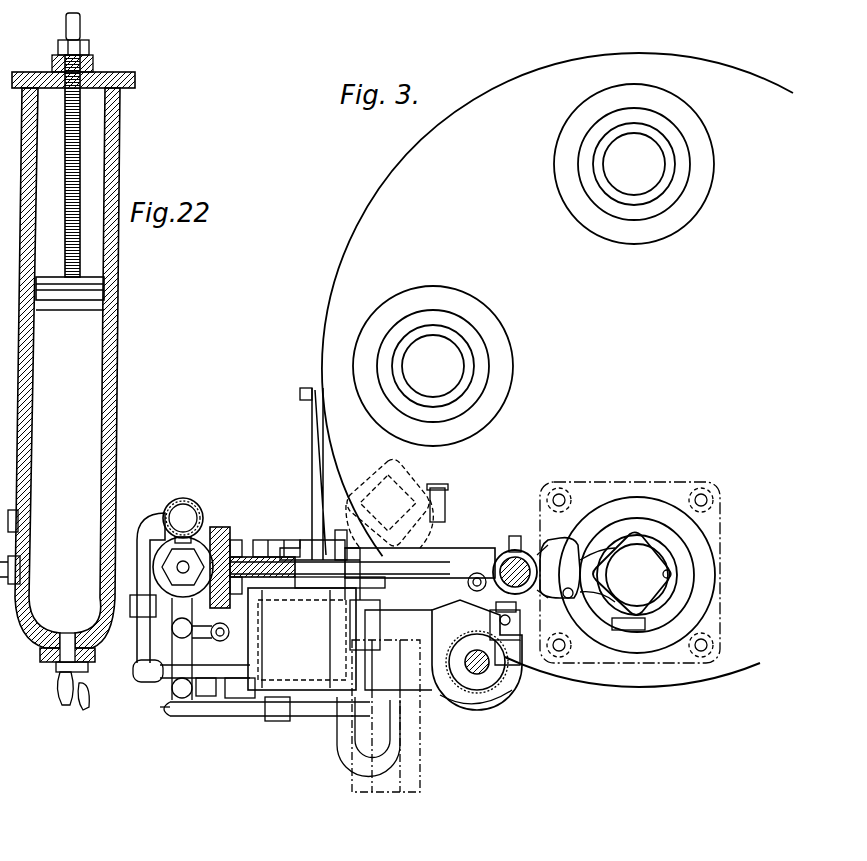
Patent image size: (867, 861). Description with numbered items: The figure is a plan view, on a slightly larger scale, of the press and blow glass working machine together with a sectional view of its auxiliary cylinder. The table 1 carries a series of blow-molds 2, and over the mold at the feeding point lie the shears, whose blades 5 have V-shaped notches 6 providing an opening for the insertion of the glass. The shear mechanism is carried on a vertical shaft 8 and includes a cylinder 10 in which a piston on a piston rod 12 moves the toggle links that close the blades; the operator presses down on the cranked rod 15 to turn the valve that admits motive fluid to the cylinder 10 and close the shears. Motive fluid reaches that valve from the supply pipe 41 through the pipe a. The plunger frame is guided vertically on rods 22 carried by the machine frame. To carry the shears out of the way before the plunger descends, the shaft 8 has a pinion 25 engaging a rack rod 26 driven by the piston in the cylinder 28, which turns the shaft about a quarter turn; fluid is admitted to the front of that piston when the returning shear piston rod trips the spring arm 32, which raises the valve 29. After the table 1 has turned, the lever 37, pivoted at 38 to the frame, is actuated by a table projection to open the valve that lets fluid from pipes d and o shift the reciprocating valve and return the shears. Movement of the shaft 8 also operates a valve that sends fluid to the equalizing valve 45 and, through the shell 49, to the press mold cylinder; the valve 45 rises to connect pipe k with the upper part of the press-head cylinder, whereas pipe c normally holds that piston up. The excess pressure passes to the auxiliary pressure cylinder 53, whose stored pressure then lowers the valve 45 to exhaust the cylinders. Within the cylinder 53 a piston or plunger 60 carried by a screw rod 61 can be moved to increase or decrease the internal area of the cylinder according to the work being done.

In FIG. 3, the table 1 is at (557, 370).
In FIG. 3, the blow-molds 2 is at (680, 188).
In FIG. 3, the shear blades 5 is at (672, 576).
In FIG. 3, the V-shaped notches 6 is at (632, 600).
In FIG. 3, the vertical shaft 8 is at (483, 672).
In FIG. 3, the cylinder 10 is at (455, 538).
In FIG. 3, the piston rod 12 is at (577, 555).
In FIG. 3, the cranked rod 15 is at (612, 622).
In FIG. 3, the rods 22 is at (512, 545).
In FIG. 3, the pinion 25 is at (463, 700).
In FIG. 3, the rack rod 26 is at (428, 632).
In FIG. 3, the cylinder 28 is at (316, 615).
In FIG. 3, the valve 29 is at (520, 625).
In FIG. 3, the spring arm 32 is at (519, 655).
In FIG. 3, the lever 37 is at (312, 452).
In FIG. 3, the pivot 38 is at (330, 535).
In FIG. 3, the pipe 41 is at (183, 518).
In FIG. 3, the equalizing valve 45 is at (195, 555).
In FIG. 3, the shell 49 is at (506, 607).
In FIG. 22, the auxiliary pressure cylinder 53 is at (118, 393).
In FIG. 22, the piston or plunger 60 is at (85, 287).
In FIG. 22, the screw rod 61 is at (80, 169).
In FIG. 3, the pipe a is at (140, 640).
In FIG. 3, the pipe c is at (185, 696).
In FIG. 3, the pipe d is at (485, 705).
In FIG. 3, the pipe k is at (225, 650).
In FIG. 3, the pipe o is at (205, 718).